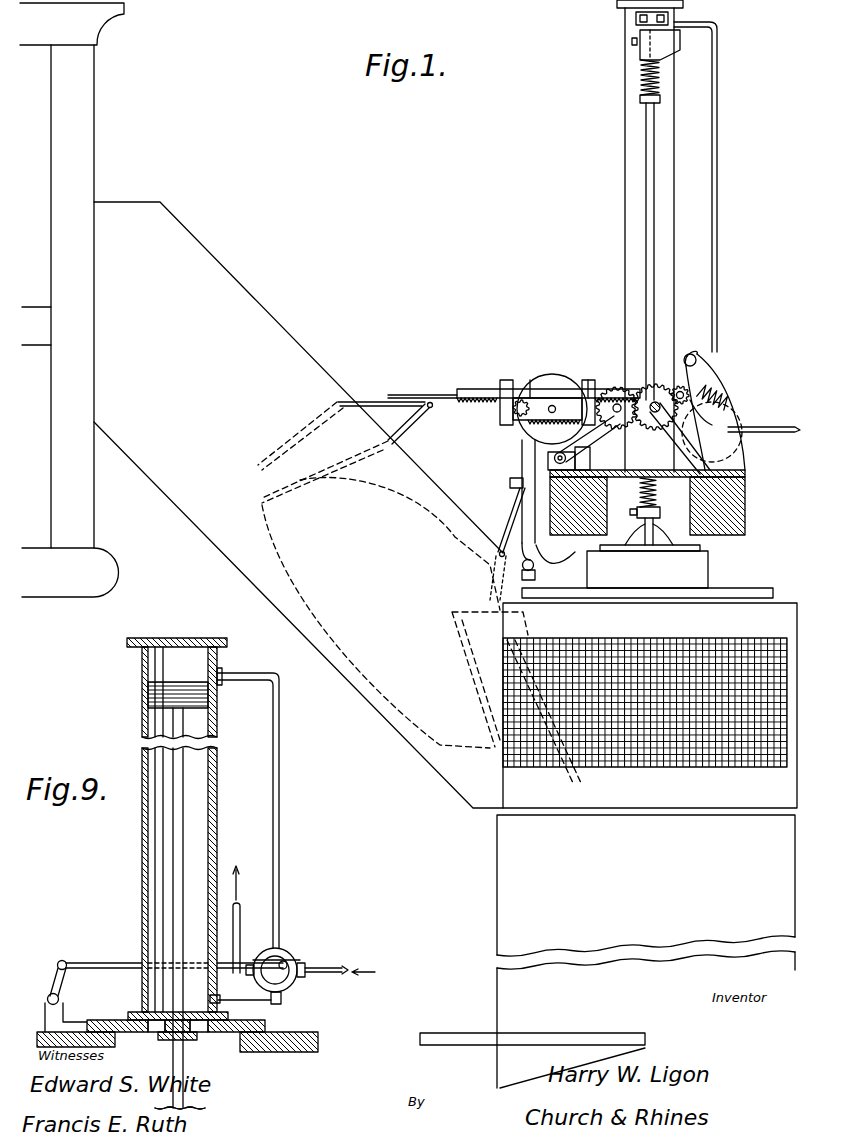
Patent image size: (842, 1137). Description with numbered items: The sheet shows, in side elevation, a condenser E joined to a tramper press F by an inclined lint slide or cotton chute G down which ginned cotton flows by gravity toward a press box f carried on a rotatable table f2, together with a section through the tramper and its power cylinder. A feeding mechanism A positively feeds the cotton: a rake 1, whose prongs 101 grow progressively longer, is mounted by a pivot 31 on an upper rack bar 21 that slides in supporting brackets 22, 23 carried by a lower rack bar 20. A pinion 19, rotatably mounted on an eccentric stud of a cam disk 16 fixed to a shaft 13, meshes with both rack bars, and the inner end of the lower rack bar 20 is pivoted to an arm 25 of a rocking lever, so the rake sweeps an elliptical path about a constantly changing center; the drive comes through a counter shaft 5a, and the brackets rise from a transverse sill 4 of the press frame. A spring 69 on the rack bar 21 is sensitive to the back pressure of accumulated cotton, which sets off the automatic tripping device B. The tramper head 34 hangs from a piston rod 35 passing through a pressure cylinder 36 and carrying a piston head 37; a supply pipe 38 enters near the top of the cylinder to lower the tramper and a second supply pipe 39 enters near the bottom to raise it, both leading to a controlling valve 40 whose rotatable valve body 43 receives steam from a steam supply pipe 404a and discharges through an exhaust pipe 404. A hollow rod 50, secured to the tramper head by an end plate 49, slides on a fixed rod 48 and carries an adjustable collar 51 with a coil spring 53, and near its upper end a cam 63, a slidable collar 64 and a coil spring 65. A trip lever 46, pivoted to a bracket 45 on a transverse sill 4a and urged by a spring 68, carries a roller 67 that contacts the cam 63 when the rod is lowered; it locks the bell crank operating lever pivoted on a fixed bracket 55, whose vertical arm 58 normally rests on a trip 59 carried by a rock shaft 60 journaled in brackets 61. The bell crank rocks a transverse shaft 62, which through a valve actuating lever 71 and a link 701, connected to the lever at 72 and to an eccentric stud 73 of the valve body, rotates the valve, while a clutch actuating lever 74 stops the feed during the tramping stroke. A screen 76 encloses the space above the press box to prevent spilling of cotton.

In FIG. 1, the rake 1 is at (362, 402).
In FIG. 1, the prongs 101 is at (305, 437).
In FIG. 1, the transverse sill 4 is at (603, 519).
In FIG. 9, the transverse sill 4 is at (118, 1033).
In FIG. 1, the transverse sill 4a is at (738, 521).
In FIG. 9, the transverse sill 4a is at (318, 1045).
In FIG. 1, the counter shaft 5a is at (617, 404).
In FIG. 1, the shaft 13 is at (555, 405).
In FIG. 1, the cam disk 16 is at (550, 378).
In FIG. 1, the pinion 19 is at (516, 410).
In FIG. 1, the lower rack bar 20 is at (520, 426).
In FIG. 1, the upper rack bar 21 is at (530, 384).
In FIG. 1, the supporting bracket 22 is at (505, 382).
In FIG. 1, the supporting bracket 23 is at (590, 384).
In FIG. 1, the lever arm 25 is at (601, 443).
In FIG. 1, the pivot 31 is at (398, 394).
In FIG. 1, the tramper head 34 is at (700, 571).
In FIG. 9, the tramper head 34 is at (203, 1108).
In FIG. 9, the piston rod 35 is at (180, 858).
In FIG. 1, the pressure cylinder 36 is at (625, 160).
In FIG. 9, the pressure cylinder 36 is at (213, 803).
In FIG. 9, the piston head 37 is at (150, 692).
In FIG. 1, the fluid pressure supply pipe 38 is at (717, 178).
In FIG. 9, the fluid pressure supply pipe 38 is at (279, 763).
In FIG. 9, the second fluid pressure supply pipe 39 is at (283, 1003).
In FIG. 1, the controlling valve 40 is at (727, 446).
In FIG. 9, the controlling valve 40 is at (300, 965).
In FIG. 9, the valve body 43 is at (290, 978).
In FIG. 1, the bracket 45 is at (732, 411).
In FIG. 1, the trip lever 46 is at (698, 362).
In FIG. 1, the fixed rod 48 is at (638, 19).
In FIG. 1, the end plate 49 is at (646, 551).
In FIG. 1, the hollow rod 50 is at (647, 212).
In FIG. 1, the collar 51 is at (660, 513).
In FIG. 1, the coil spring 53 is at (652, 491).
In FIG. 9, the fixed bracket 55 is at (48, 1012).
In FIG. 1, the vertical arm 58 is at (522, 518).
In FIG. 1, the trip 59 is at (532, 576).
In FIG. 1, the rock shaft 60 is at (522, 565).
In FIG. 1, the brackets 61 is at (560, 550).
In FIG. 1, the transverse shaft 62 is at (552, 460).
In FIG. 9, the transverse shaft 62 is at (60, 1000).
In FIG. 1, the cam 63 is at (672, 46).
In FIG. 1, the slidable collar 64 is at (640, 104).
In FIG. 1, the coil spring 65 is at (641, 80).
In FIG. 1, the roller 67 is at (690, 399).
In FIG. 1, the spring 68 is at (722, 390).
In FIG. 1, the spring 69 is at (430, 408).
In FIG. 1, the valve actuating lever 71 is at (559, 452).
In FIG. 9, the valve actuating lever 71 is at (62, 985).
In FIG. 9, the link connection point 72 is at (57, 956).
In FIG. 9, the eccentric stud 73 is at (285, 961).
In FIG. 1, the clutch actuating lever 74 is at (640, 475).
In FIG. 1, the screen 76 is at (708, 806).
In FIG. 9, the link 701 is at (108, 964).
In FIG. 9, the exhaust pipe 404 is at (239, 947).
In FIG. 1, the steam supply pipe 404a is at (764, 441).
In FIG. 9, the steam supply pipe 404a is at (366, 959).
In FIG. 1, the feeding mechanism A is at (548, 382).
In FIG. 1, the automatic tripping device B is at (688, 412).
In FIG. 1, the condenser E is at (72, 300).
In FIG. 1, the tramper press F is at (298, 631).
In FIG. 1, the lint slide G is at (298, 377).
In FIG. 1, the press box f is at (510, 885).
In FIG. 1, the rotatable table f2 is at (465, 1021).